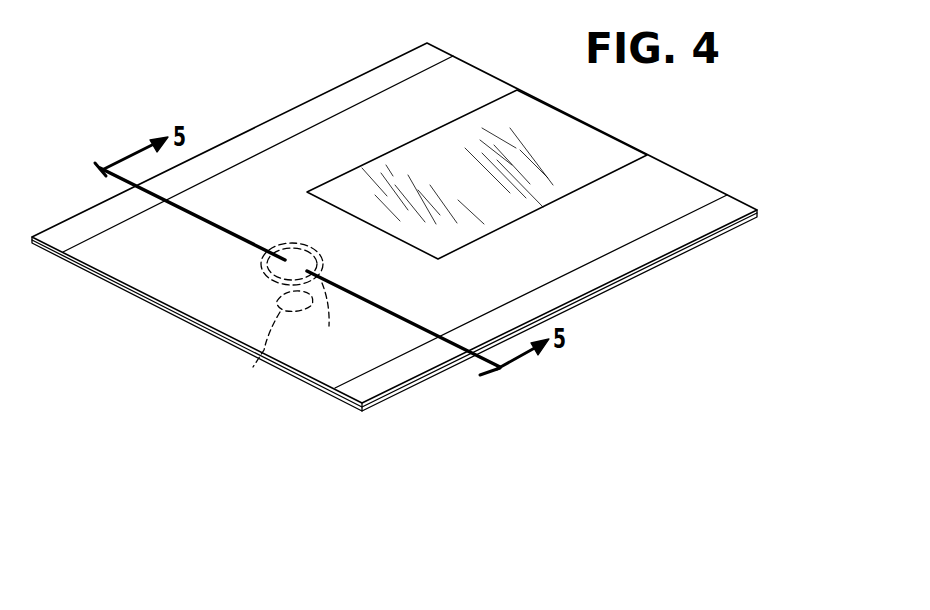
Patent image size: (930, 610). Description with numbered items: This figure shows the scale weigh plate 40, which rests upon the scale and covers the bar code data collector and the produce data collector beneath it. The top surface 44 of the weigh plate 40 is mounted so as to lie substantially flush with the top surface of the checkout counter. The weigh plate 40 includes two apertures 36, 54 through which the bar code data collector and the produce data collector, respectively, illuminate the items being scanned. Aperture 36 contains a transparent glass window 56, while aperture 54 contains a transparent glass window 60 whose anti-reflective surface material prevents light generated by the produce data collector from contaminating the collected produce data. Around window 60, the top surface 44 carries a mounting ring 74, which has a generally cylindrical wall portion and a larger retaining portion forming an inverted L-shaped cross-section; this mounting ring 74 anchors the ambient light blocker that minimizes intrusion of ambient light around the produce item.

The weigh plate 40 is at (700, 180).
The top surface 44 is at (365, 113).
The aperture 36 is at (590, 184).
The transparent window 56 is at (498, 213).
The aperture 54 is at (323, 263).
The mounting ring 74 is at (332, 331).
The transparent window 60 is at (248, 372).